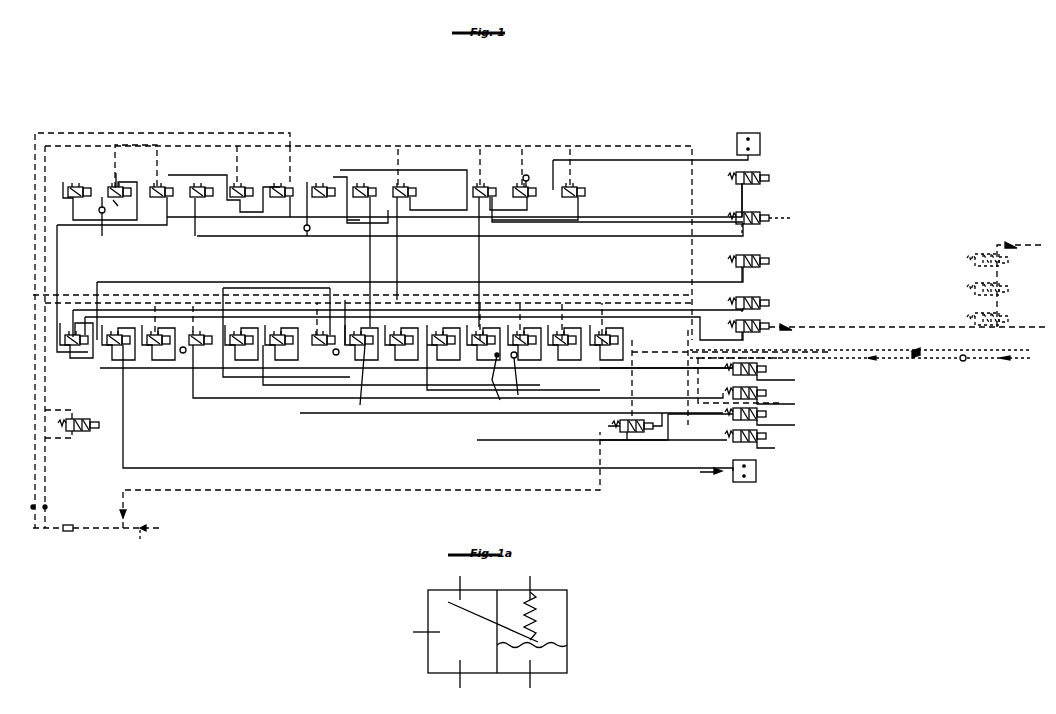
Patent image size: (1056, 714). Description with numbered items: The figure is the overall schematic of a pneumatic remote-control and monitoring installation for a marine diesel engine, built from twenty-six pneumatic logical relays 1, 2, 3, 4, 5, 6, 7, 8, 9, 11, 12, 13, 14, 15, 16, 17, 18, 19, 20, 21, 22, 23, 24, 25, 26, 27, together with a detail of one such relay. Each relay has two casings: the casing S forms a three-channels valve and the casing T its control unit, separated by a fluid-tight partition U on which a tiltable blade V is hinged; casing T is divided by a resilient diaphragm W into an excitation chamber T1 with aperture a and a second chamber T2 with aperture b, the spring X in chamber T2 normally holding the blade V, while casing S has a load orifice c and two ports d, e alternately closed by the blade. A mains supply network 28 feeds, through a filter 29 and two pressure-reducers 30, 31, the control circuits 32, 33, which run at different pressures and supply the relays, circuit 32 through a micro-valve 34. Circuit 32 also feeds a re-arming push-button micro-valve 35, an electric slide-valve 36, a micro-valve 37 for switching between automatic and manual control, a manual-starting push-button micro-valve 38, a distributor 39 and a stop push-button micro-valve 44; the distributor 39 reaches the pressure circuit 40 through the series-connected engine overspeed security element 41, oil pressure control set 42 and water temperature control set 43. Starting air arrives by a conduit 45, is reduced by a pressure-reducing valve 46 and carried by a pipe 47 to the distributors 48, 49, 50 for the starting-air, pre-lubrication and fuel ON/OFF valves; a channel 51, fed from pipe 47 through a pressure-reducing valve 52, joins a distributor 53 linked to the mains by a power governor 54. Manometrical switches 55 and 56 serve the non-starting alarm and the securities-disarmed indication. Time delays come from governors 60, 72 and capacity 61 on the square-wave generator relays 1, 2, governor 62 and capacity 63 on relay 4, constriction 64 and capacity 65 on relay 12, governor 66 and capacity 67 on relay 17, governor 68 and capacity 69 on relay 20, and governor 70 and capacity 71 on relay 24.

In FIG. 1, the pneumatic logical relay 1 is at (78, 186).
In FIG. 1, the pneumatic logical relay 2 is at (118, 190).
In FIG. 1, the pneumatic logical relay 3 is at (160, 186).
In FIG. 1, the pneumatic logical relay 4 is at (200, 186).
In FIG. 1, the pneumatic logical relay 5 is at (240, 188).
In FIG. 1, the pneumatic logical relay 6 is at (285, 188).
In FIG. 1, the pneumatic logical relay 7 is at (325, 188).
In FIG. 1, the pneumatic logical relay 8 is at (365, 188).
In FIG. 1, the pneumatic logical relay 9 is at (405, 188).
In FIG. 1, the pneumatic logical relay 11 is at (485, 188).
In FIG. 1, the pneumatic logical relay 12 is at (528, 190).
In FIG. 1, the pneumatic logical relay 13 is at (577, 188).
In FIG. 1, the pneumatic logical relay 14 is at (78, 348).
In FIG. 1, the pneumatic logical relay 15 is at (118, 348).
In FIG. 1, the pneumatic logical relay 16 is at (158, 348).
In FIG. 1, the pneumatic logical relay 17 is at (200, 335).
In FIG. 1, the pneumatic logical relay 18 is at (382, 355).
In FIG. 1, the pneumatic logical relay 19 is at (285, 340).
In FIG. 1, the pneumatic logical relay 20 is at (325, 290).
In FIG. 1, the pneumatic logical relay 21 is at (361, 369).
In FIG. 1, the pneumatic logical relay 22 is at (405, 335).
In FIG. 1, the pneumatic logical relay 23 is at (445, 335).
In FIG. 1, the pneumatic logical relay 24 is at (485, 335).
In FIG. 1, the pneumatic logical relay 25 is at (526, 335).
In FIG. 1, the pneumatic logical relay 26 is at (563, 348).
In FIG. 1, the pneumatic logical relay 27 is at (605, 348).
In FIG. 1, the mains supply network 28 is at (143, 541).
In FIG. 1, the filter 29 is at (68, 532).
In FIG. 1, the pressure-reducer 30 is at (47, 507).
In FIG. 1, the pressure-reducer 31 is at (31, 509).
In FIG. 1, the control circuit 32 is at (336, 147).
In FIG. 1, the control circuit 33 is at (133, 134).
In FIG. 1, the micro-valve 34 is at (90, 432).
In FIG. 1, the push-button micro-valve 35 is at (762, 174).
In FIG. 1, the electric slide-valve 36 is at (762, 214).
In FIG. 1, the micro-valve 37 is at (762, 257).
In FIG. 1, the push-button micro-valve 38 is at (762, 299).
In FIG. 1, the distributor 39 is at (762, 322).
In FIG. 1, the circuit of fluid under pressure 40 is at (855, 322).
In FIG. 1, the engine overspeed security element 41 is at (974, 262).
In FIG. 1, the oil pressure control set 42 is at (974, 292).
In FIG. 1, the water temperature control set 43 is at (983, 322).
In FIG. 1, the push-button micro-valve 44 is at (770, 448).
In FIG. 1, the conduit 45 is at (997, 360).
In FIG. 1, the pressure-reducing valve 46 is at (963, 362).
In FIG. 1, the pipe 47 is at (875, 360).
In FIG. 1, the distributor 48 is at (768, 375).
In FIG. 1, the distributor 49 is at (768, 397).
In FIG. 1, the distributor 50 is at (768, 418).
In FIG. 1, the channel 51 is at (796, 353).
In FIG. 1, the pressure-reducing valve 52 is at (932, 351).
In FIG. 1, the distributor 53 is at (627, 442).
In FIG. 1, the power governor 54 is at (120, 512).
In FIG. 1, the manometrical switch 55 is at (761, 137).
In FIG. 1, the manometrical switch 56 is at (758, 482).
In FIG. 1, the power governor 60 is at (116, 172).
In FIG. 1, the capacity 61 is at (104, 222).
In FIG. 1, the governor 62 is at (250, 224).
In FIG. 1, the capacity 63 is at (309, 238).
In FIG. 1, the constriction 64 is at (540, 198).
In FIG. 1, the capacity 65 is at (526, 175).
In FIG. 1, the governor 66 is at (195, 350).
In FIG. 1, the capacity 67 is at (181, 353).
In FIG. 1, the governor 68 is at (333, 354).
In FIG. 1, the capacity 69 is at (345, 318).
In FIG. 1, the governor 70 is at (505, 382).
In FIG. 1, the capacity 71 is at (524, 379).
In FIG. 1, the power governor 72 is at (114, 201).
In FIG. 1A, the casing S is at (430, 660).
In FIG. 1A, the casing T is at (567, 622).
In FIG. 1A, the excitation chamber T1 is at (516, 667).
In FIG. 1A, the second chamber T2 is at (566, 603).
In FIG. 1A, the fluid-tight partition U is at (498, 605).
In FIG. 1A, the tiltable blade V is at (480, 604).
In FIG. 1A, the resilient diaphragm W is at (570, 645).
In FIG. 1A, the spring X is at (537, 597).
In FIG. 1A, the aperture a is at (535, 674).
In FIG. 1A, the aperture b is at (535, 588).
In FIG. 1A, the load orifice c is at (426, 625).
In FIG. 1A, the port d is at (455, 588).
In FIG. 1A, the port e is at (455, 674).